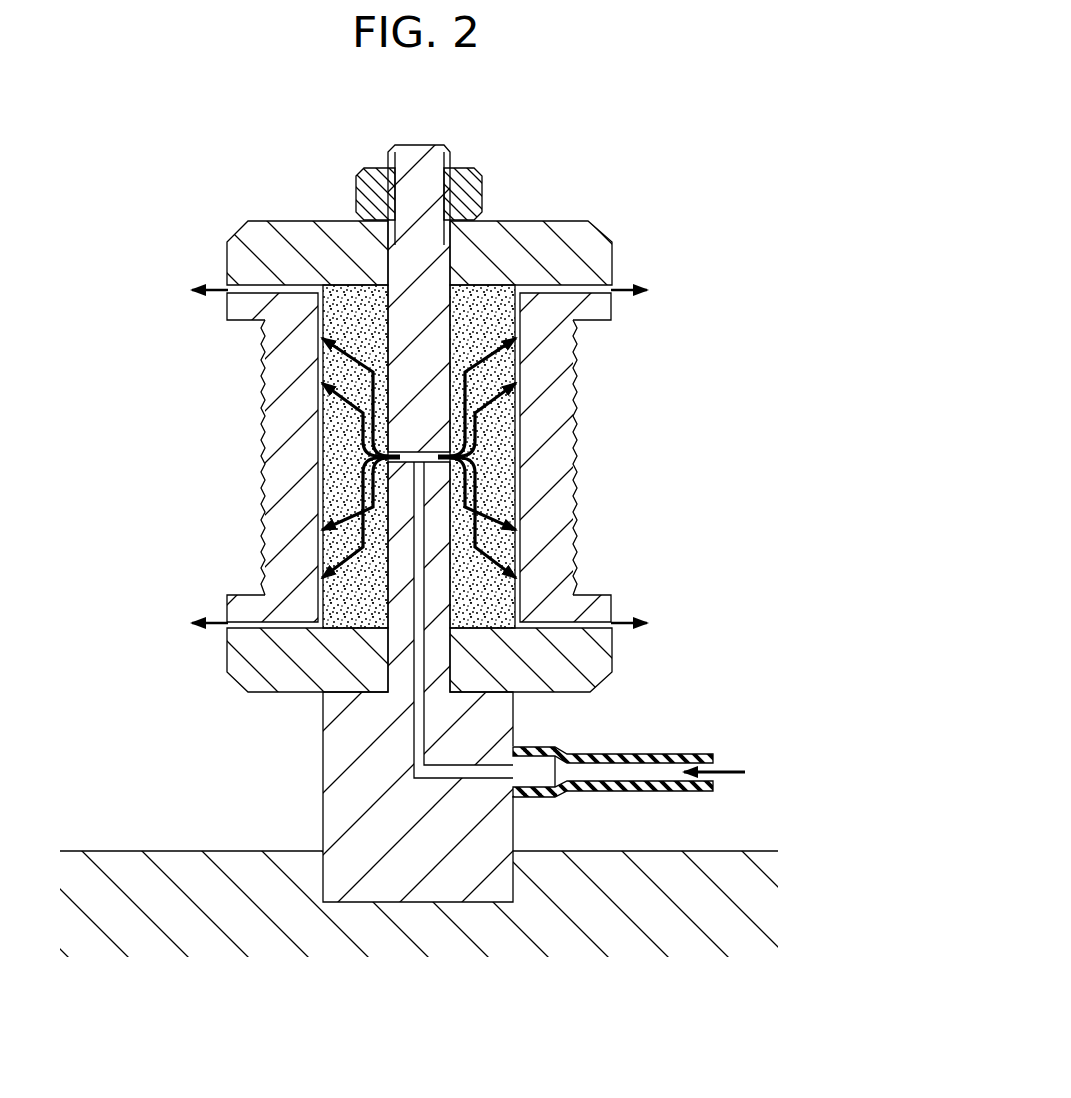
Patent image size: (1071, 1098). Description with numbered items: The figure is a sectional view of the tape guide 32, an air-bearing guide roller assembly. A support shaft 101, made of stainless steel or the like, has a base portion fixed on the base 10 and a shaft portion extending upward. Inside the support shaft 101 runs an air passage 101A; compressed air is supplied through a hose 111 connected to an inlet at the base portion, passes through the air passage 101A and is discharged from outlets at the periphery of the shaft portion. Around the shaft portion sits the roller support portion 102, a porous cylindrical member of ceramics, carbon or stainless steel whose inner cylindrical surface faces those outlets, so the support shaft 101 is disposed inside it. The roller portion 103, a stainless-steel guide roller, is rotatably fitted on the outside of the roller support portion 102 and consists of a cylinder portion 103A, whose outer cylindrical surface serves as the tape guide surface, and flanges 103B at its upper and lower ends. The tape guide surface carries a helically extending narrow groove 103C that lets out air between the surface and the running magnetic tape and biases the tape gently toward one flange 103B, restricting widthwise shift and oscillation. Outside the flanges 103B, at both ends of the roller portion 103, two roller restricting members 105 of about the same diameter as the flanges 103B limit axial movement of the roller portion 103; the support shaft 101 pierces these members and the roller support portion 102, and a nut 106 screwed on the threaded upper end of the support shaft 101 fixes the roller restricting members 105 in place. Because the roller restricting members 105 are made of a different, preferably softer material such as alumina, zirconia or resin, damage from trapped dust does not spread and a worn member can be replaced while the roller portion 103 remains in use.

The tape guide 32 is at (640, 150).
The base 10 is at (725, 851).
The support shaft 101 is at (473, 822).
The air passage 101A is at (415, 722).
The roller support portion 102 is at (340, 320).
The roller portion 103 is at (472, 457).
The cylinder portion 103A is at (548, 492).
The flanges 103B is at (604, 311).
The helically extending narrow groove 103C is at (573, 387).
The roller restricting members 105 is at (526, 236).
The nut 106 is at (365, 189).
The hose 111 is at (667, 753).